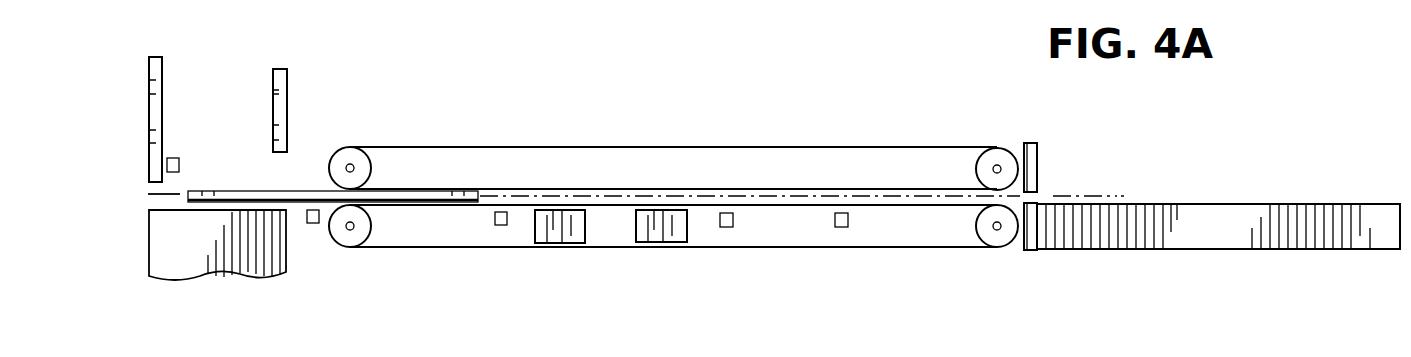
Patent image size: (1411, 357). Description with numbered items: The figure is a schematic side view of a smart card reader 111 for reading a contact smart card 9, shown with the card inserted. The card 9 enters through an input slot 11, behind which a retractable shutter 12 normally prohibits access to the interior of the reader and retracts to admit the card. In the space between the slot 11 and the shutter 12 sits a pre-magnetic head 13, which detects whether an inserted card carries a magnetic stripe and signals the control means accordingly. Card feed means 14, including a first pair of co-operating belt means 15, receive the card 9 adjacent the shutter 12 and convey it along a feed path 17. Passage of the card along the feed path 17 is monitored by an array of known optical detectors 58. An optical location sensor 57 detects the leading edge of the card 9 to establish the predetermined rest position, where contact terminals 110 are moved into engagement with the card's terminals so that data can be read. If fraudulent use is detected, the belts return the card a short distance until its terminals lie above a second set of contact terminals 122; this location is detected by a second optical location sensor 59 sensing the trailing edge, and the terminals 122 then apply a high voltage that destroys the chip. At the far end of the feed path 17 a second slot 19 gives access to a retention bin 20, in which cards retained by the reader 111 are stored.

The contact smart card 9 is at (247, 191).
The input slot 11 is at (145, 201).
The retractable shutter 12 is at (273, 83).
The pre-magnetic head 13 is at (173, 158).
The card feed means 14 is at (617, 142).
The first pair of belt means 15 is at (864, 147).
The feed path 17 is at (690, 185).
The second slot 19 is at (1048, 188).
The retention bin 20 is at (1195, 237).
The optical location sensor 57 is at (727, 227).
The optical detectors 58 is at (313, 223).
The second optical location sensor 59 is at (493, 225).
The contact terminals 110 is at (647, 242).
The smart card reader 111 is at (972, 276).
The second set of contact terminals 122 is at (545, 243).